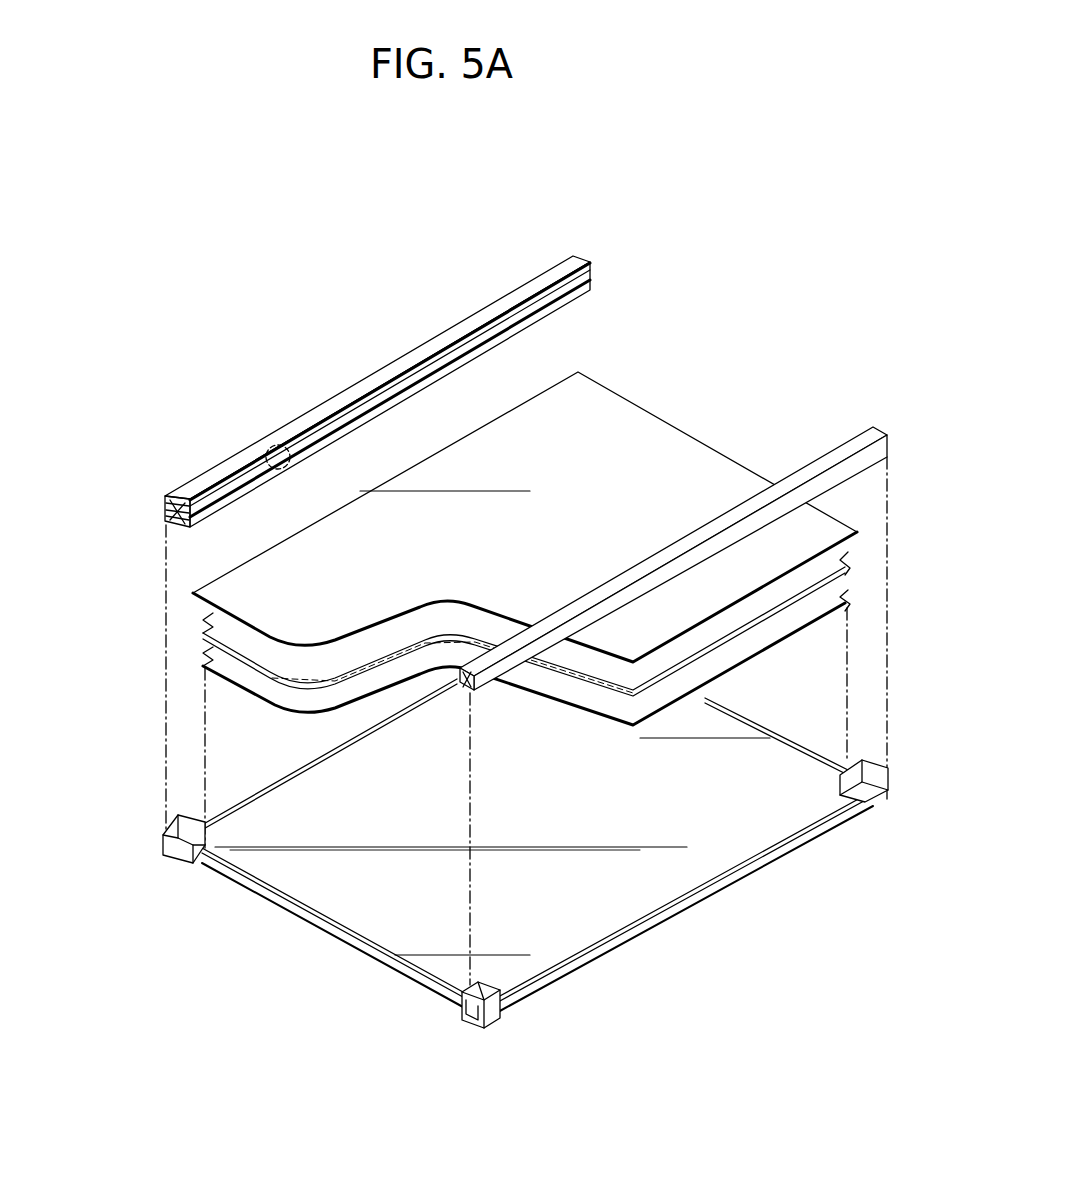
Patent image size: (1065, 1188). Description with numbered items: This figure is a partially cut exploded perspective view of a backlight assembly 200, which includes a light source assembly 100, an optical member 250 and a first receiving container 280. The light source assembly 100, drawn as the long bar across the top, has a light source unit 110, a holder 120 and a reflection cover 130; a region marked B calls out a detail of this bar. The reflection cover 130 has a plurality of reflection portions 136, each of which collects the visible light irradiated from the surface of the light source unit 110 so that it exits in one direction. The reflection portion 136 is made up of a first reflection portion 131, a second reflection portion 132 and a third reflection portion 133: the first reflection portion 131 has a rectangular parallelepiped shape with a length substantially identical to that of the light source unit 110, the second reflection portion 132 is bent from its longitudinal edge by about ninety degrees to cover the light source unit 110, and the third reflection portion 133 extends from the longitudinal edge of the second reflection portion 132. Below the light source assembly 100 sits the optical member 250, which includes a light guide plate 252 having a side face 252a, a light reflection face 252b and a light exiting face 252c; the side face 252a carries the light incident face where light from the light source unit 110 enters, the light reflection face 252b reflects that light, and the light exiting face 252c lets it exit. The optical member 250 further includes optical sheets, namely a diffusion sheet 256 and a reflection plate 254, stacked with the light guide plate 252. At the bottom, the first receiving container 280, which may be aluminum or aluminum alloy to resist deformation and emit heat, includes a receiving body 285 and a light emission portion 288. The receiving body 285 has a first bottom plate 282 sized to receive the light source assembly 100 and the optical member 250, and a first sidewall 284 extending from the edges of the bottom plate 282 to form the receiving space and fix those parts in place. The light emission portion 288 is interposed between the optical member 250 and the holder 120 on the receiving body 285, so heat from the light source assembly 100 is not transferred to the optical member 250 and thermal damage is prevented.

The light source assembly 100 is at (206, 400).
The light source unit 110 is at (247, 473).
The holder 120 is at (168, 528).
The reflection cover 130 is at (318, 400).
The first reflection portion 131 is at (180, 487).
The second reflection portion 132 is at (166, 505).
The third reflection portion 133 is at (166, 520).
The reflection portion 136 is at (96, 462).
The detail region B is at (271, 443).
The backlight assembly 200 is at (748, 410).
The optical member 250 is at (96, 580).
The light guide plate 252 is at (190, 623).
The side face 252a is at (245, 668).
The light reflection face 252b is at (300, 688).
The light exiting face 252c is at (303, 684).
The reflection plate 254 is at (190, 658).
The diffusion sheet 256 is at (182, 593).
The first receiving container 280 is at (325, 968).
The first bottom plate 282 is at (672, 928).
The first sidewall 284 is at (666, 964).
The receiving body 285 is at (780, 976).
The light emission portion 288 is at (885, 752).